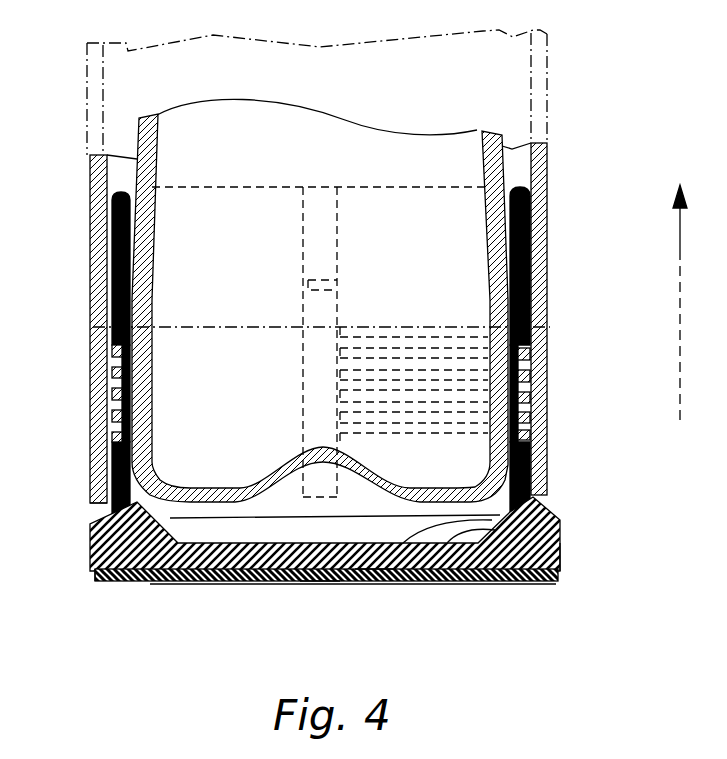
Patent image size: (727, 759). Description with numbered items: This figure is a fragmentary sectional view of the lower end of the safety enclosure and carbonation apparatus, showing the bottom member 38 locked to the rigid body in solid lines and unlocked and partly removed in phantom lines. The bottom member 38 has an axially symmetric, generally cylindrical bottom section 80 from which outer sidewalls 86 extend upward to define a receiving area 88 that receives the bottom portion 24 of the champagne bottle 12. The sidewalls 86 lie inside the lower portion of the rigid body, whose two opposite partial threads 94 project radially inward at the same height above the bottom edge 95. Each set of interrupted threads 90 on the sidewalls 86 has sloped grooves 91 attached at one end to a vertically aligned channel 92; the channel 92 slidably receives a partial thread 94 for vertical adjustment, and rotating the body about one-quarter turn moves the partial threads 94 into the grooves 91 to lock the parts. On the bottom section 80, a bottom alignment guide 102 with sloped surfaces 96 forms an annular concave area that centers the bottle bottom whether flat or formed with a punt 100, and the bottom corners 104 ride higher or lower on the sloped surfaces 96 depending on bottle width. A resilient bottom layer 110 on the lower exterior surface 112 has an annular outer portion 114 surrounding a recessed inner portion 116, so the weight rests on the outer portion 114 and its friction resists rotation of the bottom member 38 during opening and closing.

The champagne bottle 12 is at (477, 131).
The interrupted threads 90 is at (357, 333).
The sloped grooves 91 is at (380, 337).
The receiving area 88 is at (117, 257).
The bottom portion 24 is at (472, 345).
The vertically aligned channel 92 is at (320, 417).
The partial threads 94 is at (533, 427).
The outer sidewalls 86 is at (120, 447).
The bottom corners 104 is at (530, 476).
The bottom edge 95 is at (100, 505).
The bottom member 38 is at (88, 553).
The resilient bottom layer 110 is at (561, 567).
The annular outer portion 114 is at (120, 590).
The bottom section 80 is at (138, 590).
The punt 100 is at (293, 497).
The recessed inner portion 116 is at (320, 583).
The bottom alignment guide 102 is at (373, 569).
The sloped surfaces 96 is at (433, 572).
The lower exterior surface 112 is at (512, 583).